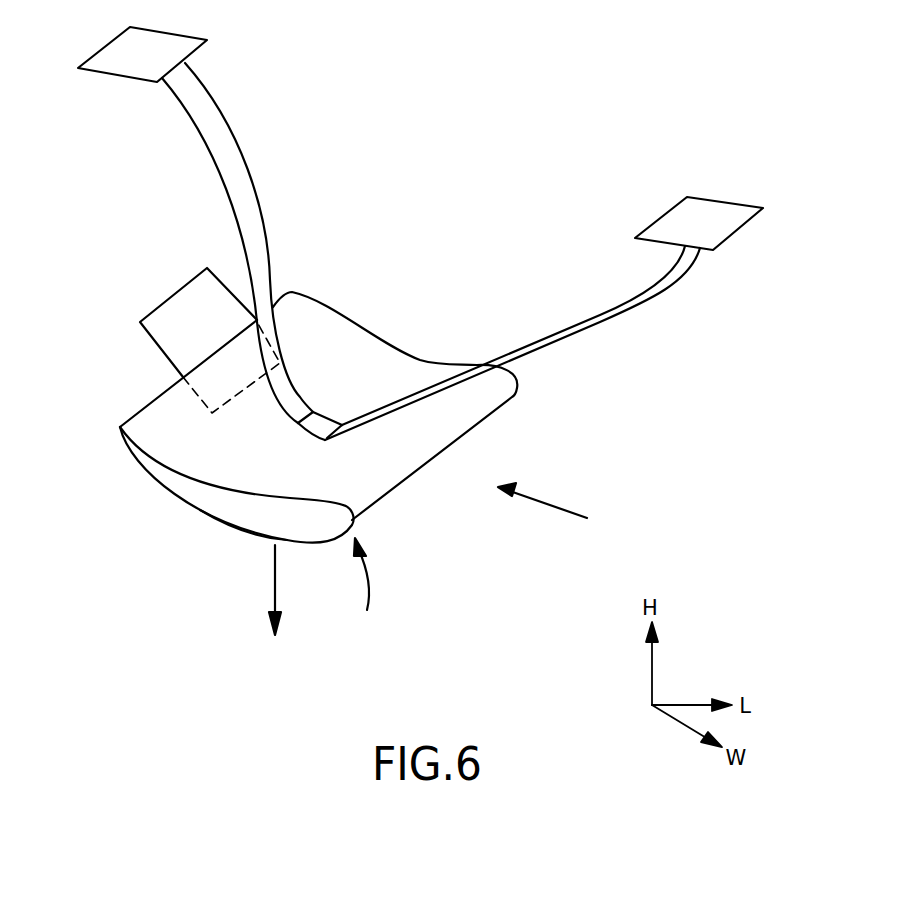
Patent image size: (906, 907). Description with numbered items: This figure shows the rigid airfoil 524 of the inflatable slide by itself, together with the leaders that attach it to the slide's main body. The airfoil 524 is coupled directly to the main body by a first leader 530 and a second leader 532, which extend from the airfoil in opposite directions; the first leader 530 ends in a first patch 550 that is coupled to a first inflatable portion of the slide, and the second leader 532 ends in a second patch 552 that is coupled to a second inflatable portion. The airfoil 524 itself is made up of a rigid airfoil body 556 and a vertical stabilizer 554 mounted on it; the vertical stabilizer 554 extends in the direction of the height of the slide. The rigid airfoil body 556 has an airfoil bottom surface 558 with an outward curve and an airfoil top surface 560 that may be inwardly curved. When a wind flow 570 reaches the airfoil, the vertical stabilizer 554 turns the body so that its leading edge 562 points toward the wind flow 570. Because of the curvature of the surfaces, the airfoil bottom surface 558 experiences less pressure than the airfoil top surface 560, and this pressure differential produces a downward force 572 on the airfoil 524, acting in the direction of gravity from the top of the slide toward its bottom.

The airfoil 524 is at (370, 587).
The first leader 530 is at (250, 170).
The second leader 532 is at (590, 328).
The first patch 550 is at (122, 65).
The second patch 552 is at (710, 212).
The vertical stabilizer 554 is at (175, 292).
The rigid airfoil body 556 is at (197, 495).
The airfoil bottom surface 558 is at (233, 530).
The airfoil top surface 560 is at (360, 360).
The leading edge 562 is at (490, 413).
The wind flow 570 is at (543, 503).
The downward force 572 is at (275, 598).